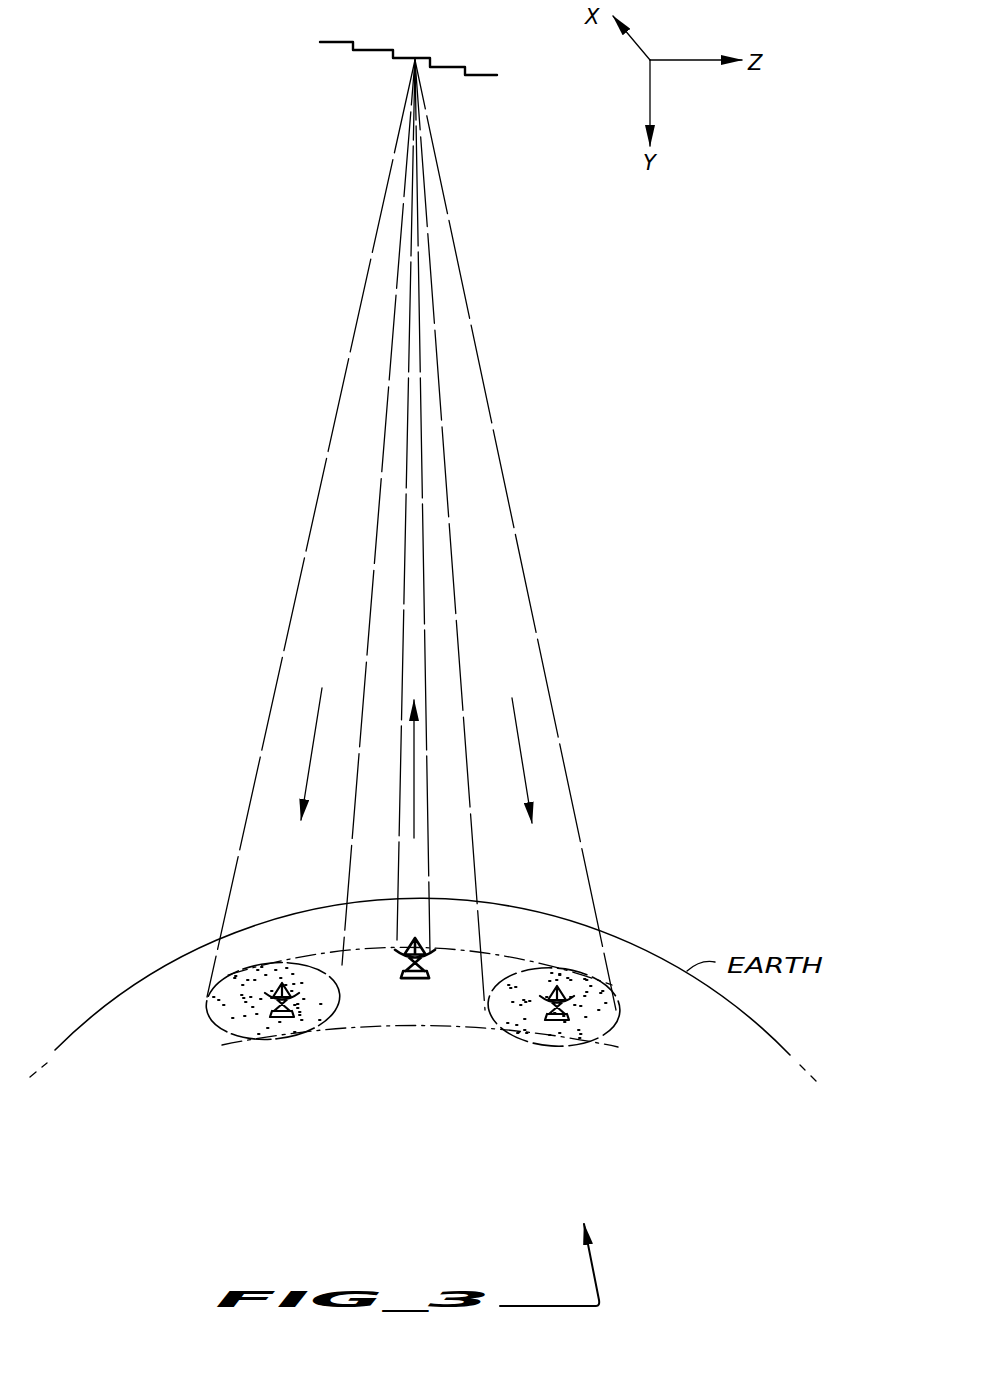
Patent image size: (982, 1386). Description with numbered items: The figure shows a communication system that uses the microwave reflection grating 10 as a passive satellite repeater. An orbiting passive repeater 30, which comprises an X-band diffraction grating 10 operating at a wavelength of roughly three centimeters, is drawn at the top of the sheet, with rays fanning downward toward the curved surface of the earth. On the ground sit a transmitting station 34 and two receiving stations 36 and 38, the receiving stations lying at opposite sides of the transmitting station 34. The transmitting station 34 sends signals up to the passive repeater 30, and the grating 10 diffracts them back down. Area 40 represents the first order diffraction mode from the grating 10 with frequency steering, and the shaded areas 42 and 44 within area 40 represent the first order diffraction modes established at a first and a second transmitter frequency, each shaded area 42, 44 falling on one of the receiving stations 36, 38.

The microwave reflection grating 10 is at (427, 54).
The passive repeater 30 is at (330, 73).
The ground transmitting station 34 is at (421, 968).
The receiving station 36 is at (296, 1012).
The receiving station 38 is at (571, 1016).
The area 40 is at (342, 965).
The shaded area 42 is at (227, 1036).
The shaded area 44 is at (616, 1028).